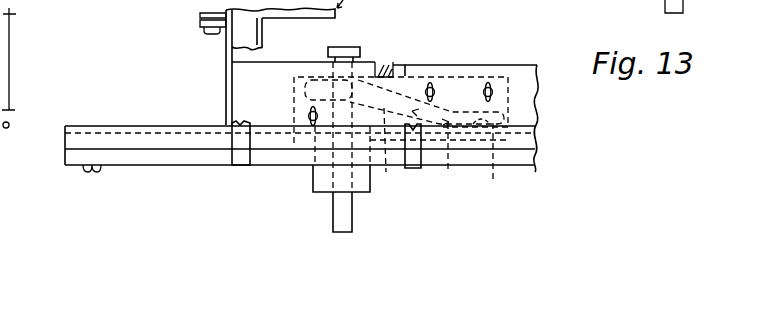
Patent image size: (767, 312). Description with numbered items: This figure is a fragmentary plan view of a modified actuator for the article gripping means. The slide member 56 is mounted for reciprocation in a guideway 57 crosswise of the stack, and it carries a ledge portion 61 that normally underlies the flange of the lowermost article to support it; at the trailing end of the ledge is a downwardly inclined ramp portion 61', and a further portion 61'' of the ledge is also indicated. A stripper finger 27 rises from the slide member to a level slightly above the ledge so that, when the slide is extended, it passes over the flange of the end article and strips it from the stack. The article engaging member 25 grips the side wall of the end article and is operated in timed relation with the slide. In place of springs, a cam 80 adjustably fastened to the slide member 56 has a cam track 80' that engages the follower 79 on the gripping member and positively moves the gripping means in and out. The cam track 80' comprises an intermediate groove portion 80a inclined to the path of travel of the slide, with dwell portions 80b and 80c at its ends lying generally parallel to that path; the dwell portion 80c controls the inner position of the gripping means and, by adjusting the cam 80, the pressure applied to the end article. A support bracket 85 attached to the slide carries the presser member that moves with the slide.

The support bracket 85 is at (200, 24).
The ledge portion 61 is at (303, 45).
The article engaging member 25 is at (371, 45).
The ramp portion 61' is at (403, 55).
The stripper finger 27 is at (402, 67).
The plate portion 61'' is at (471, 53).
The cam 80 is at (406, 88).
The slide member 56 is at (540, 93).
The guideway 57 is at (527, 150).
The follower 79 is at (302, 87).
The dwell portion 80b is at (300, 105).
The intermediate groove portion 80a is at (394, 153).
The cam track 80' is at (450, 158).
The dwell portion 80c is at (509, 164).